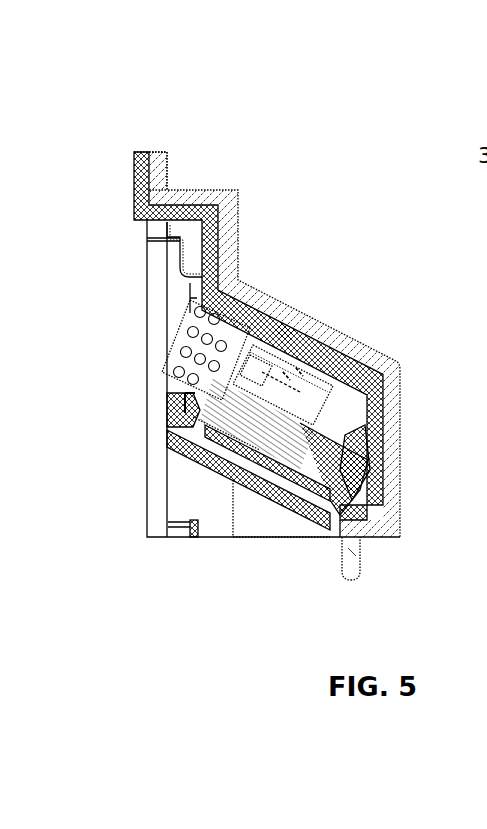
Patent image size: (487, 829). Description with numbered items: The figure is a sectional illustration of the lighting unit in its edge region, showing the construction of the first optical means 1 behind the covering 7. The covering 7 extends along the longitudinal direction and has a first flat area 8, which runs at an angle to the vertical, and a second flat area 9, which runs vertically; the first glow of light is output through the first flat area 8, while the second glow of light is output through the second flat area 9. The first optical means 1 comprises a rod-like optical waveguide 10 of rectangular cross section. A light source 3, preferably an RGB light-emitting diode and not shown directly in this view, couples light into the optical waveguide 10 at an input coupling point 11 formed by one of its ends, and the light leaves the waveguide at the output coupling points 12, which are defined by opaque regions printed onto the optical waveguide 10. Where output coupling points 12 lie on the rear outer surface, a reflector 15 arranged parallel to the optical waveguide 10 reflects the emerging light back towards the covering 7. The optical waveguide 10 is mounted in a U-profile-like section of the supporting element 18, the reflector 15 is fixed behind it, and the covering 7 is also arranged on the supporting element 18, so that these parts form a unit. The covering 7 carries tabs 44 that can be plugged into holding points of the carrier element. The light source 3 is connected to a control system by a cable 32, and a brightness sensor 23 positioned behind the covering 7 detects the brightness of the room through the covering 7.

The first optical means 1 is at (290, 480).
The light source 3 is at (280, 378).
The covering 7 is at (390, 433).
The first flat area 8 is at (290, 320).
The second flat area 9 is at (228, 237).
The optical waveguide 10 is at (325, 403).
The input coupling point 11 is at (300, 372).
The output coupling point 12 is at (334, 323).
The reflector 15 is at (265, 432).
The supporting element 18 is at (237, 452).
The brightness sensor 23 is at (300, 390).
The connecting cable 32 is at (197, 338).
The tab 44 is at (382, 600).